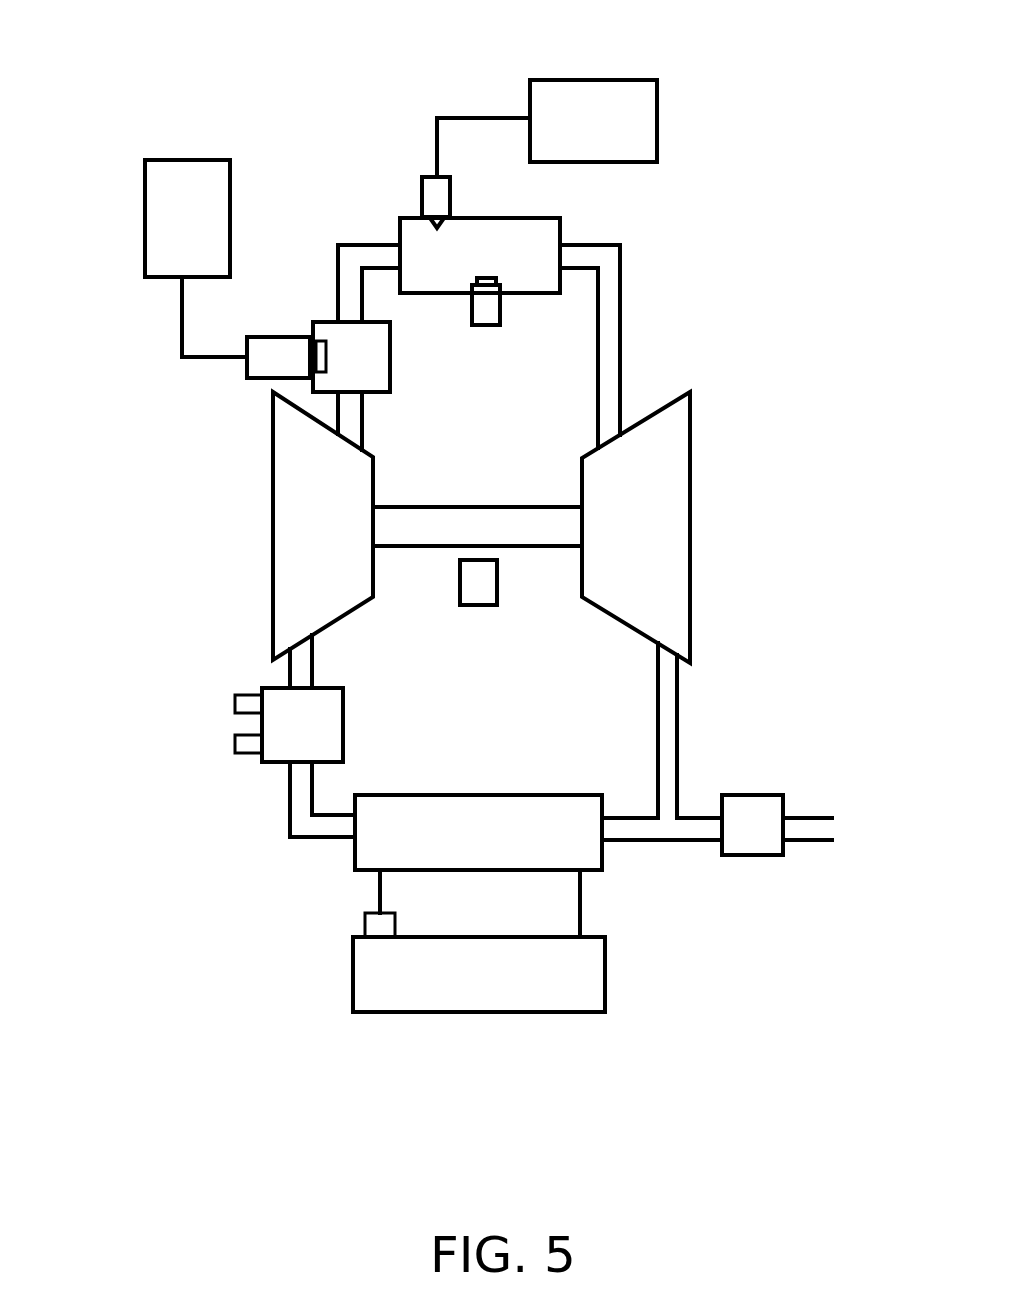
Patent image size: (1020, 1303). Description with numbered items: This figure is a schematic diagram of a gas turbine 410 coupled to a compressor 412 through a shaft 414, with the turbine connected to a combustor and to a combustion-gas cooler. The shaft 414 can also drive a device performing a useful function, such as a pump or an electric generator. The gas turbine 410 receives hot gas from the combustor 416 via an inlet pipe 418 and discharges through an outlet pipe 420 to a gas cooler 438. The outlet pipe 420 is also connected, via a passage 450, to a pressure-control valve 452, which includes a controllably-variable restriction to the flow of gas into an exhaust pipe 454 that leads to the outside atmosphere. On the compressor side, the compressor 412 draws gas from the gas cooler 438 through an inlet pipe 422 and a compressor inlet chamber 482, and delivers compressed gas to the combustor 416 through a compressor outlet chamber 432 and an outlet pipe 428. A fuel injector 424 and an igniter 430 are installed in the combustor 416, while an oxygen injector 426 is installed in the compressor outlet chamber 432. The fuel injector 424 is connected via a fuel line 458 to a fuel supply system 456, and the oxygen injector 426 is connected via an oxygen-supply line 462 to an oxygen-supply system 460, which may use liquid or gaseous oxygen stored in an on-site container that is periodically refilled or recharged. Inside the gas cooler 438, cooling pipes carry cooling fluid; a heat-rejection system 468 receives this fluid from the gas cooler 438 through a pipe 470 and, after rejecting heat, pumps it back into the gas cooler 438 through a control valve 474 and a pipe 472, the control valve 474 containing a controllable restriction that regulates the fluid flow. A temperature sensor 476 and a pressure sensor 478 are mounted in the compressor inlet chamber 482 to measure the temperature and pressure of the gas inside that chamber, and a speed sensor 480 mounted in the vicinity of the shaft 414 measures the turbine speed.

The gas turbine 410 is at (686, 453).
The compressor 412 is at (270, 553).
The shaft 414 is at (497, 502).
The combustor 416 is at (565, 228).
The inlet pipe 418 is at (625, 322).
The outlet pipe 420 is at (655, 727).
The inlet pipe 422 is at (286, 803).
The fuel injector 424 is at (422, 197).
The oxygen injector 426 is at (256, 380).
The outlet pipe 428 is at (336, 305).
The igniter 430 is at (498, 327).
The compressor outlet chamber 432 is at (377, 377).
The gas cooler 438 is at (478, 800).
The passage 450 is at (702, 830).
The pressure-control valve 452 is at (773, 855).
The exhaust pipe 454 is at (805, 828).
The fuel supply system 456 is at (598, 78).
The fuel line 458 is at (482, 125).
The oxygen-supply system 460 is at (152, 227).
The oxygen-supply line 462 is at (187, 300).
The heat-rejection system 468 is at (600, 980).
The pipe 470 is at (582, 907).
The pipe 472 is at (382, 878).
The control valve 474 is at (367, 920).
The temperature sensor 476 is at (237, 697).
The pressure sensor 478 is at (237, 755).
The speed sensor 480 is at (472, 607).
The compressor inlet chamber 482 is at (345, 727).